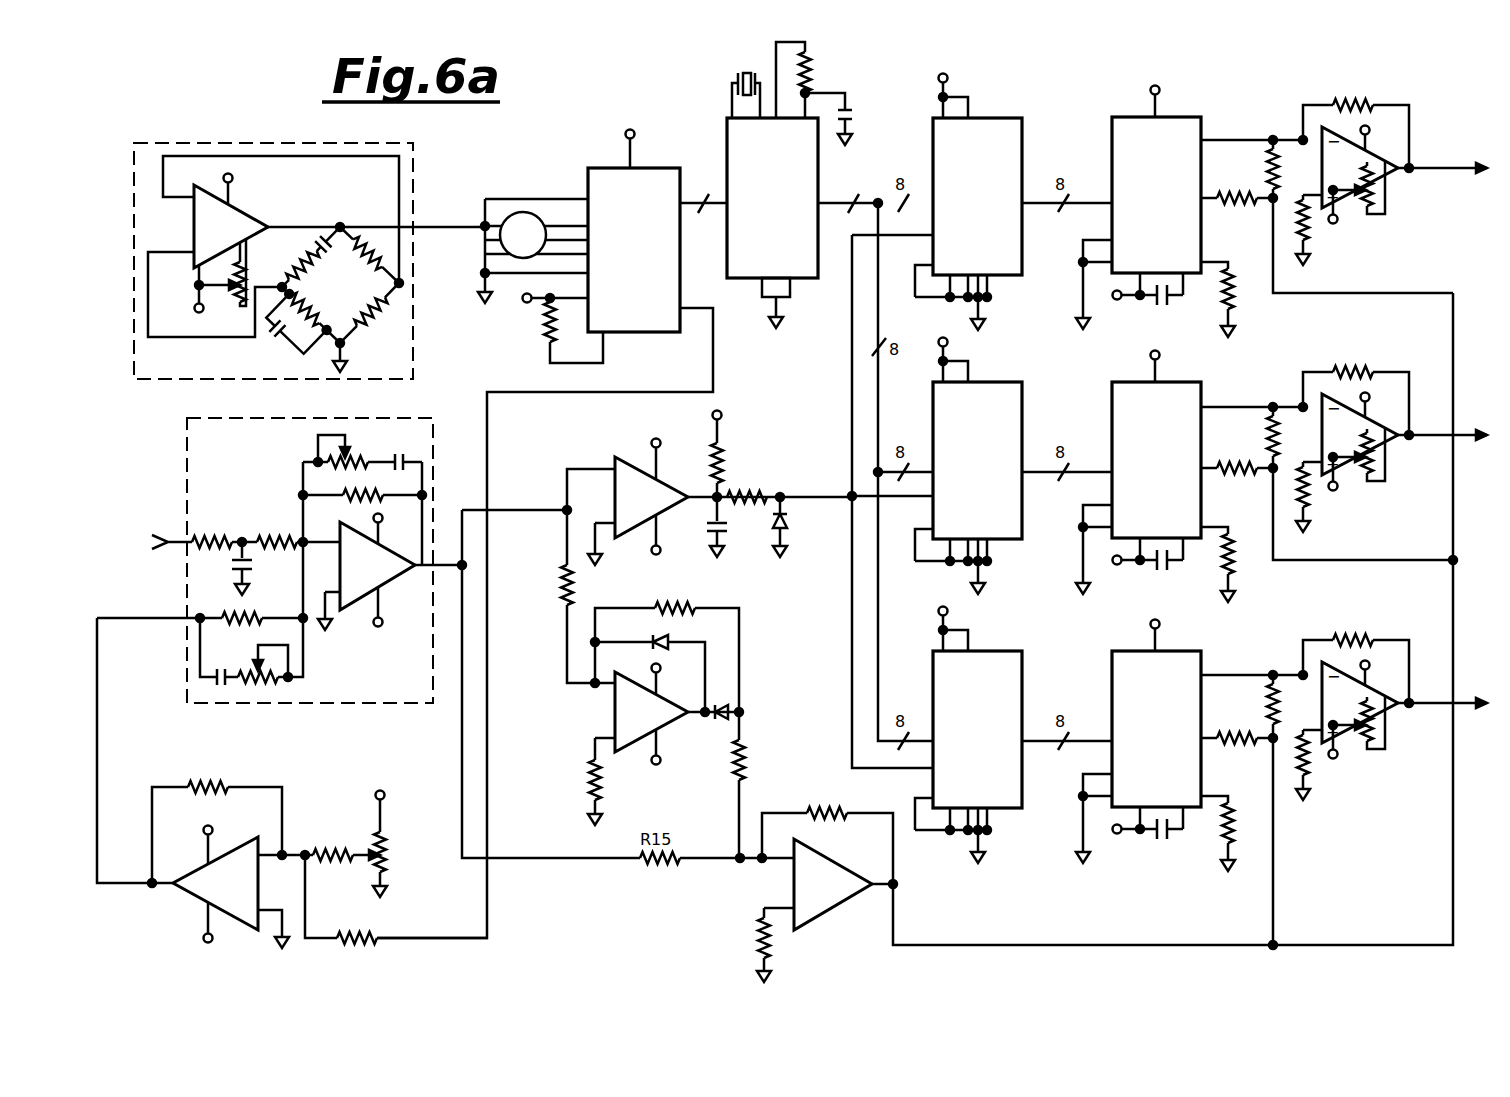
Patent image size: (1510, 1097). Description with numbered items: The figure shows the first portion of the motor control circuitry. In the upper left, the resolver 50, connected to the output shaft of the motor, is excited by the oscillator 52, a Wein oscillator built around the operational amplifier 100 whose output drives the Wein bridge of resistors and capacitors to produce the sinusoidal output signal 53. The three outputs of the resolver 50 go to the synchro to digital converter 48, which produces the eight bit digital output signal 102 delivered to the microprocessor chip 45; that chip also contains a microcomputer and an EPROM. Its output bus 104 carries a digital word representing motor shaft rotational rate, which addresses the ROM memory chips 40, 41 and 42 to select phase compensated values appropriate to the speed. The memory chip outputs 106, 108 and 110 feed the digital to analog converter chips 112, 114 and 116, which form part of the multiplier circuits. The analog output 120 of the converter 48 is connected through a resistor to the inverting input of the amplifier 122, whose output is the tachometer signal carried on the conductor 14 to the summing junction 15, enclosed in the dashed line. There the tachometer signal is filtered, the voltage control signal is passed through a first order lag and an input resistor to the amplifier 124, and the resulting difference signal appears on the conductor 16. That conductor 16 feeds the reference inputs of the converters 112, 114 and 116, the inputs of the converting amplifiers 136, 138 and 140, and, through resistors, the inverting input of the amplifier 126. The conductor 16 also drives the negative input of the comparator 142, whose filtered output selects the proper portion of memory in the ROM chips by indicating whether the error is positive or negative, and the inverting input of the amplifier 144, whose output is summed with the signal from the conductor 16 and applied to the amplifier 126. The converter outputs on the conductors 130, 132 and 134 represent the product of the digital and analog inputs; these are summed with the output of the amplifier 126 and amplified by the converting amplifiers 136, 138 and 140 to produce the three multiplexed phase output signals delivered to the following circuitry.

The oscillator 52 is at (398, 143).
The sinusoidal output signal 53 is at (432, 218).
The operational amplifier 100 is at (220, 245).
The resolver 50 is at (499, 234).
The synchro to digital converter 48 is at (640, 257).
The microprocessor chip 45 is at (779, 207).
The eight bit digital output signal 102 is at (688, 208).
The output bus 104 is at (824, 208).
The analog output 120 is at (718, 345).
The ROM memory chip 40 is at (985, 206).
The ROM memory chip 41 is at (985, 470).
The ROM memory chip 42 is at (985, 739).
The memory chip output 106 is at (1040, 200).
The memory chip output 108 is at (1037, 470).
The memory chip output 110 is at (1035, 744).
The digital to analog converter chip 112 is at (1162, 206).
The digital to analog converter chip 114 is at (1160, 470).
The digital to analog converter chip 116 is at (1160, 739).
The converter output conductor 130 is at (1228, 140).
The converter output conductor 132 is at (1220, 407).
The converter output conductor 134 is at (1228, 675).
The converting amplifier 136 is at (1363, 184).
The converting amplifier 138 is at (1363, 451).
The converting amplifier 140 is at (1363, 719).
The summing junction 15 is at (420, 418).
The difference signal conductor 16 is at (450, 560).
The tachometer feedback signal conductor 14 is at (132, 618).
The amplifier 124 is at (381, 580).
The amplifier 122 is at (230, 897).
The amplifier 126 is at (834, 897).
The comparator 142 is at (654, 510).
The amplifier 144 is at (654, 727).